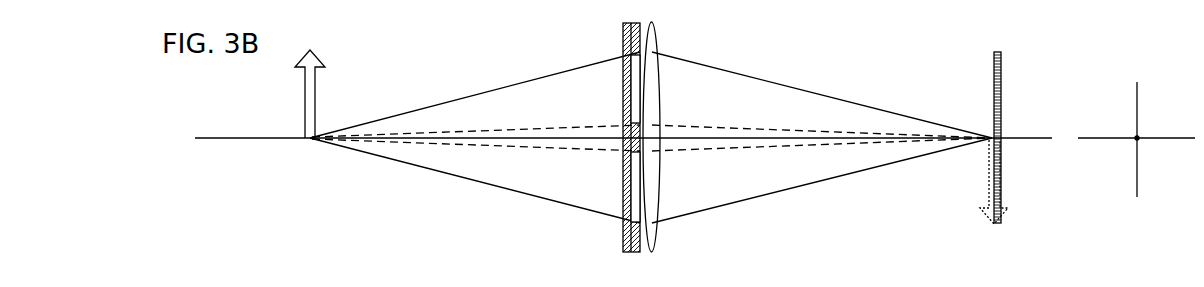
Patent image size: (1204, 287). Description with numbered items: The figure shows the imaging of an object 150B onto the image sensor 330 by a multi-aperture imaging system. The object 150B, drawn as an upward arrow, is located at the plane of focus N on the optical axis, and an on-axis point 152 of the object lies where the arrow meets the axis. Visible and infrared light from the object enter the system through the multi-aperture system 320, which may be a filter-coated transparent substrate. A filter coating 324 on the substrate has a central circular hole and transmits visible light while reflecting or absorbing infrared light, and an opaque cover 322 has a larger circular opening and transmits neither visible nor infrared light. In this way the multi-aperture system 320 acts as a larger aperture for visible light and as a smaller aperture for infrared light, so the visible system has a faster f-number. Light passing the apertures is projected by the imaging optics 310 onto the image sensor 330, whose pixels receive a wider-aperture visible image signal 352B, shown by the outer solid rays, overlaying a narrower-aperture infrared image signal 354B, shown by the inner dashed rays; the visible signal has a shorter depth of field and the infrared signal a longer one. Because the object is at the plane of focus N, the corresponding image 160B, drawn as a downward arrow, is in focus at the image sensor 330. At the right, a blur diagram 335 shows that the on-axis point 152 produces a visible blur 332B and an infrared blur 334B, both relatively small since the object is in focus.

The object 150B is at (310, 85).
The on-axis point 152 is at (310, 140).
The plane of focus N is at (310, 140).
The multi-aperture system 320 is at (630, 143).
The opaque cover 322 is at (623, 237).
The filter coating 324 is at (640, 250).
The imaging optics 310 is at (671, 134).
The wider-aperture optical image signal 352B is at (804, 88).
The narrower-aperture optical image signal 354B is at (831, 130).
The image sensor 330 is at (996, 126).
The image 160B is at (995, 194).
The blur diagram 335 is at (1153, 54).
The visible blur 332B is at (1137, 138).
The infrared blur 334B is at (1137, 138).